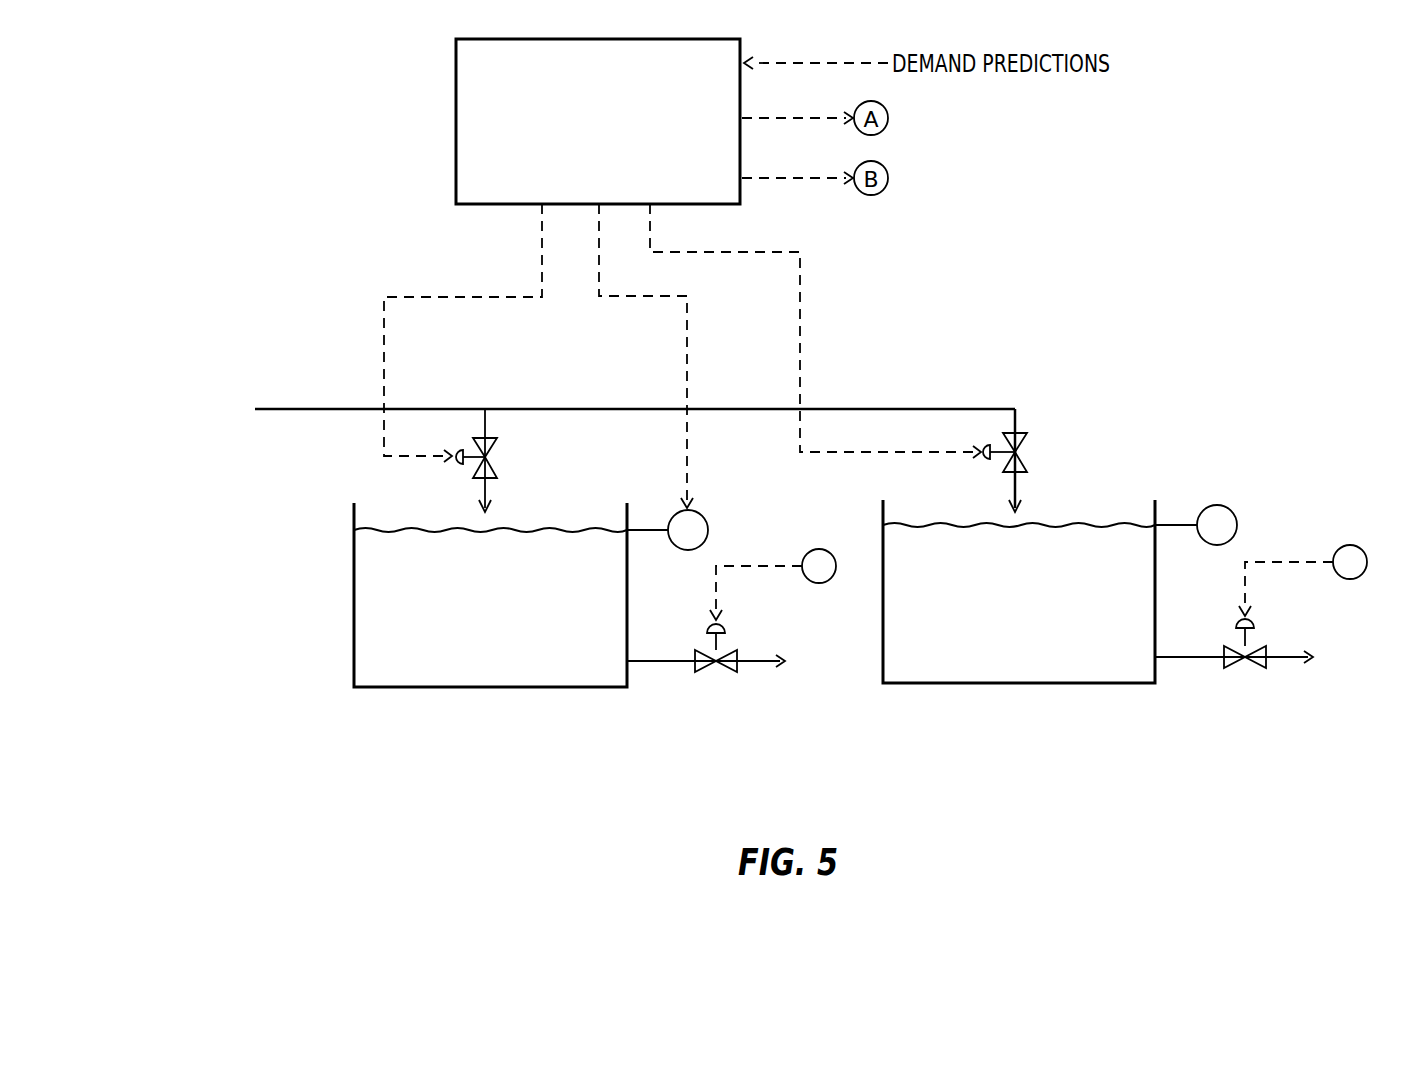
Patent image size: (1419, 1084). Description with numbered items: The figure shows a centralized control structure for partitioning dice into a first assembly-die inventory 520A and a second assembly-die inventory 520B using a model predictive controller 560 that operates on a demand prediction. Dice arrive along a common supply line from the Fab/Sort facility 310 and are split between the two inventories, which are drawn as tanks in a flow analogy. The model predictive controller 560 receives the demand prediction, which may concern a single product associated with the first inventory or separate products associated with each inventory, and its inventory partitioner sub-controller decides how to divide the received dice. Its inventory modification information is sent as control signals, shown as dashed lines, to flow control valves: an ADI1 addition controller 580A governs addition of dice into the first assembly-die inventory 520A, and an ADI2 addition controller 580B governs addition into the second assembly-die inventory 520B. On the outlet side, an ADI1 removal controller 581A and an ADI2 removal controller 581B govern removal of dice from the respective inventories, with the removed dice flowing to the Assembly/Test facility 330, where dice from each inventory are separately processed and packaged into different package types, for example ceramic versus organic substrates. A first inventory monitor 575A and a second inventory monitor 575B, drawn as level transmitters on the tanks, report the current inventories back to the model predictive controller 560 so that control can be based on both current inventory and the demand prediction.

The model predictive controller 560 is at (579, 177).
The Fab/Sort facility 310 is at (534, 426).
The Assembly/Test facility 330 is at (1015, 660).
The first assembly-die inventory 520A is at (462, 646).
The second assembly-die inventory 520B is at (988, 642).
The first inventory monitor 575A is at (704, 516).
The second inventory monitor 575B is at (1230, 507).
The ADI1 addition controller 580A is at (492, 441).
The ADI2 addition controller 580B is at (987, 446).
The ADI1 removal controller 581A is at (697, 655).
The ADI2 removal controller 581B is at (1227, 653).